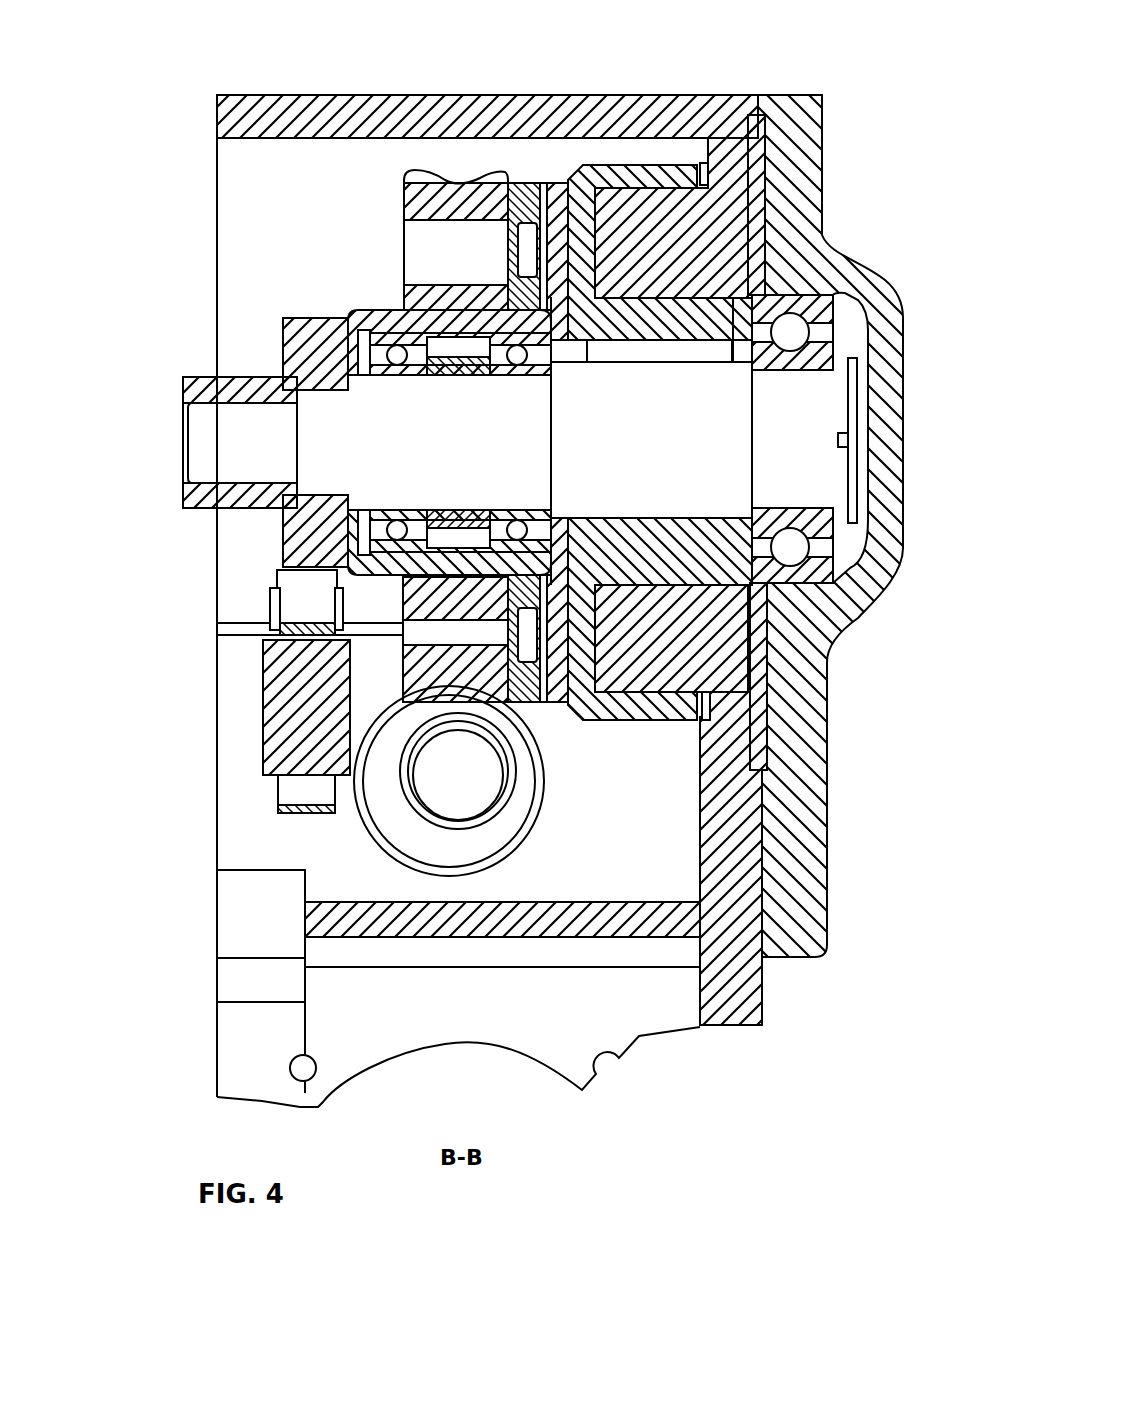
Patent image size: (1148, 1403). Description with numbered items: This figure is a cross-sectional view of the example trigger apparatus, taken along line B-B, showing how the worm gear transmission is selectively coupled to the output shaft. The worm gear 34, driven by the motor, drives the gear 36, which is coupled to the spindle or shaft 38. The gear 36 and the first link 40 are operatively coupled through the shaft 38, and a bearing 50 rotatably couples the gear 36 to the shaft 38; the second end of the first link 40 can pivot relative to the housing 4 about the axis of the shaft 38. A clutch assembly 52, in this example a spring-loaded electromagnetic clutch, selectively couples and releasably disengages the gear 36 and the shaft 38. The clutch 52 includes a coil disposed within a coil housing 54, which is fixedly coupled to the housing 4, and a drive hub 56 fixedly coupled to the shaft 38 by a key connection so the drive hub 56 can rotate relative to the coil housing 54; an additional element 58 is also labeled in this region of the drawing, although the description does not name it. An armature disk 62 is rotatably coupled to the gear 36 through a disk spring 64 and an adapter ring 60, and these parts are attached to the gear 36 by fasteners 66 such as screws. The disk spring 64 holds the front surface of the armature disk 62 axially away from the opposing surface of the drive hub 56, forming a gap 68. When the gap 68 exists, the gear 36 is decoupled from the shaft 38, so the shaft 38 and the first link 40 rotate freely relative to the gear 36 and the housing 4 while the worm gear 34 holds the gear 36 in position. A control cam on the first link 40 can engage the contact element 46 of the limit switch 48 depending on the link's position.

The housing 4 is at (735, 1015).
The worm gear 34 is at (437, 790).
The gear 36 is at (413, 205).
The shaft 38 is at (215, 445).
The first link 40 is at (200, 385).
The contact element 46 is at (300, 593).
The limit switch 48 is at (280, 703).
The bearing 50 is at (382, 351).
The clutch assembly 52 is at (585, 158).
The coil housing 54 is at (687, 200).
The drive hub 56 is at (620, 180).
The air gap 58 is at (705, 352).
The adapter ring 60 is at (527, 190).
The armature disk 62 is at (553, 192).
The disk spring 64 is at (540, 185).
The fasteners 66 is at (553, 633).
The gap 68 is at (568, 372).